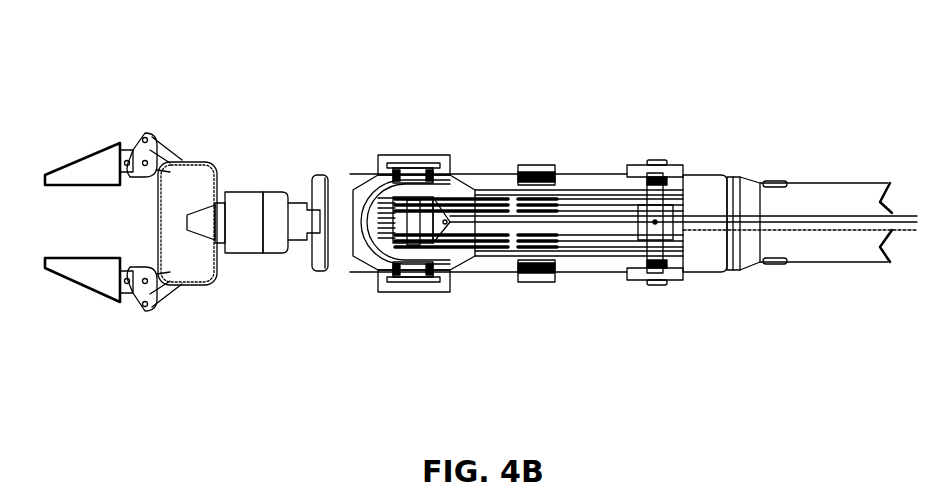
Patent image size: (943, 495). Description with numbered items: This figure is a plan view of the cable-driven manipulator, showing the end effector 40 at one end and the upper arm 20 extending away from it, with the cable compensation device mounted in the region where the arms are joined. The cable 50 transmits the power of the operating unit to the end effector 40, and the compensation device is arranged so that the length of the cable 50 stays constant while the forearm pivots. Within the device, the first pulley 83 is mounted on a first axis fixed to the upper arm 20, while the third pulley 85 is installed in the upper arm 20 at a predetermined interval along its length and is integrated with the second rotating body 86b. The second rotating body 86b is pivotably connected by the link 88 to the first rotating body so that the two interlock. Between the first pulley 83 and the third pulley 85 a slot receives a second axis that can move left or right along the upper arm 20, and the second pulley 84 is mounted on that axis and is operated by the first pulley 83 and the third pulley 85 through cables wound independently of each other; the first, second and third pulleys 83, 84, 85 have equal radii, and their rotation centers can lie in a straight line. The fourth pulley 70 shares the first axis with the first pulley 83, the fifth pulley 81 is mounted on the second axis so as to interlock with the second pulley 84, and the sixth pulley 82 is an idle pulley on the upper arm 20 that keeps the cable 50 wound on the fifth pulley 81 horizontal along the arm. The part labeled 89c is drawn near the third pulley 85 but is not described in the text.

The end effector 40 is at (187, 130).
The cable 50 is at (580, 205).
The first pulley 83 is at (412, 163).
The fourth pulley 70 is at (438, 228).
The fifth pulley 81 is at (493, 205).
The sixth pulley 82 is at (507, 230).
The second pulley 84 is at (558, 167).
The link 88 is at (613, 222).
The second rotating body 86b is at (632, 165).
The cap 89c is at (655, 162).
The third pulley 85 is at (683, 177).
The upper arm 20 is at (802, 178).